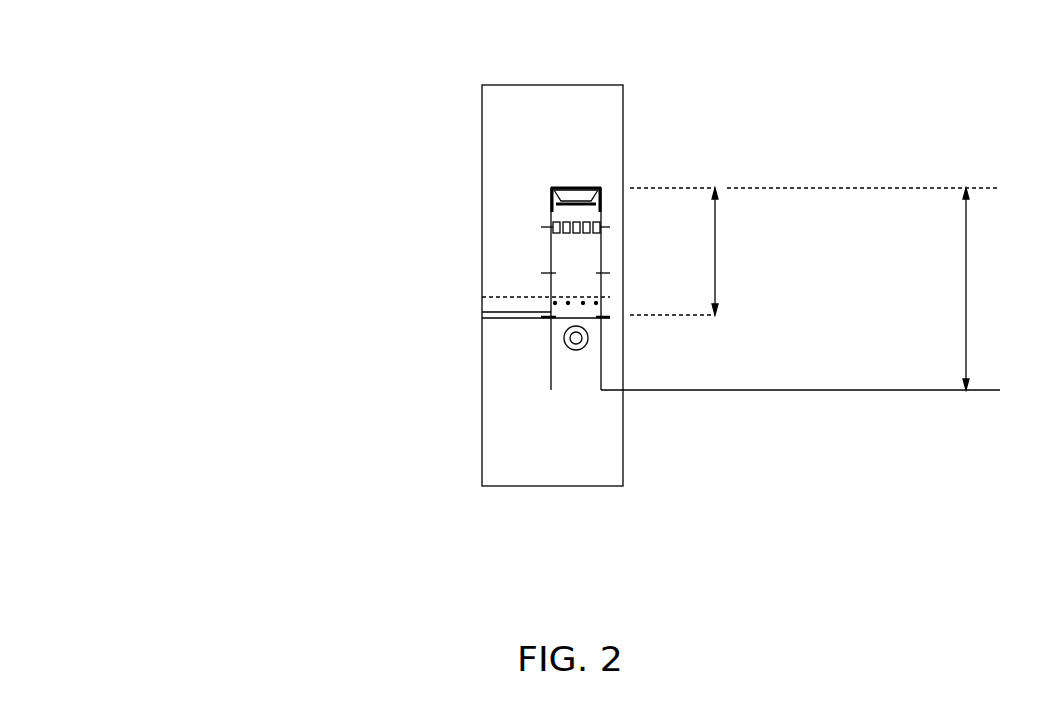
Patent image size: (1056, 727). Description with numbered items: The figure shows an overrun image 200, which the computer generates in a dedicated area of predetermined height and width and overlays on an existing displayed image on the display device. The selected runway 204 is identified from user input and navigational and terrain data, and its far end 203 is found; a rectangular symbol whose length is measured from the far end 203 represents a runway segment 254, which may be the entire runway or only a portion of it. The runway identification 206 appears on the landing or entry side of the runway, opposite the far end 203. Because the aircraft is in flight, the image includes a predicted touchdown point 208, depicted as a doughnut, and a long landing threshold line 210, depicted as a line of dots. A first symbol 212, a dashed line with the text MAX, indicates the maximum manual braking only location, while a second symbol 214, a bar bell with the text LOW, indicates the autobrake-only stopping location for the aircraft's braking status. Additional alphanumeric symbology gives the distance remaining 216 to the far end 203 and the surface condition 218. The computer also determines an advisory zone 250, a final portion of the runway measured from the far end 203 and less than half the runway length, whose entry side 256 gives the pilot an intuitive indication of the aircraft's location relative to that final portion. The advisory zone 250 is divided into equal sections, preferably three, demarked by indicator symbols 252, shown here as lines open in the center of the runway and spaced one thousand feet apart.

The overrun image 200 is at (551, 85).
The far end 203 is at (576, 187).
The selected runway 204 is at (602, 255).
The runway identification 206 is at (605, 378).
The predicted touchdown point 208 is at (590, 338).
The long landing threshold line 210 is at (506, 303).
The first symbol 212 is at (490, 228).
The second symbol 214 is at (490, 197).
The distance remaining 216 is at (598, 466).
The surface condition 218 is at (490, 425).
The advisory zone 250 is at (716, 250).
The indicator symbols 252 is at (550, 272).
The runway segment 254 is at (967, 283).
The entry side 256 is at (560, 338).